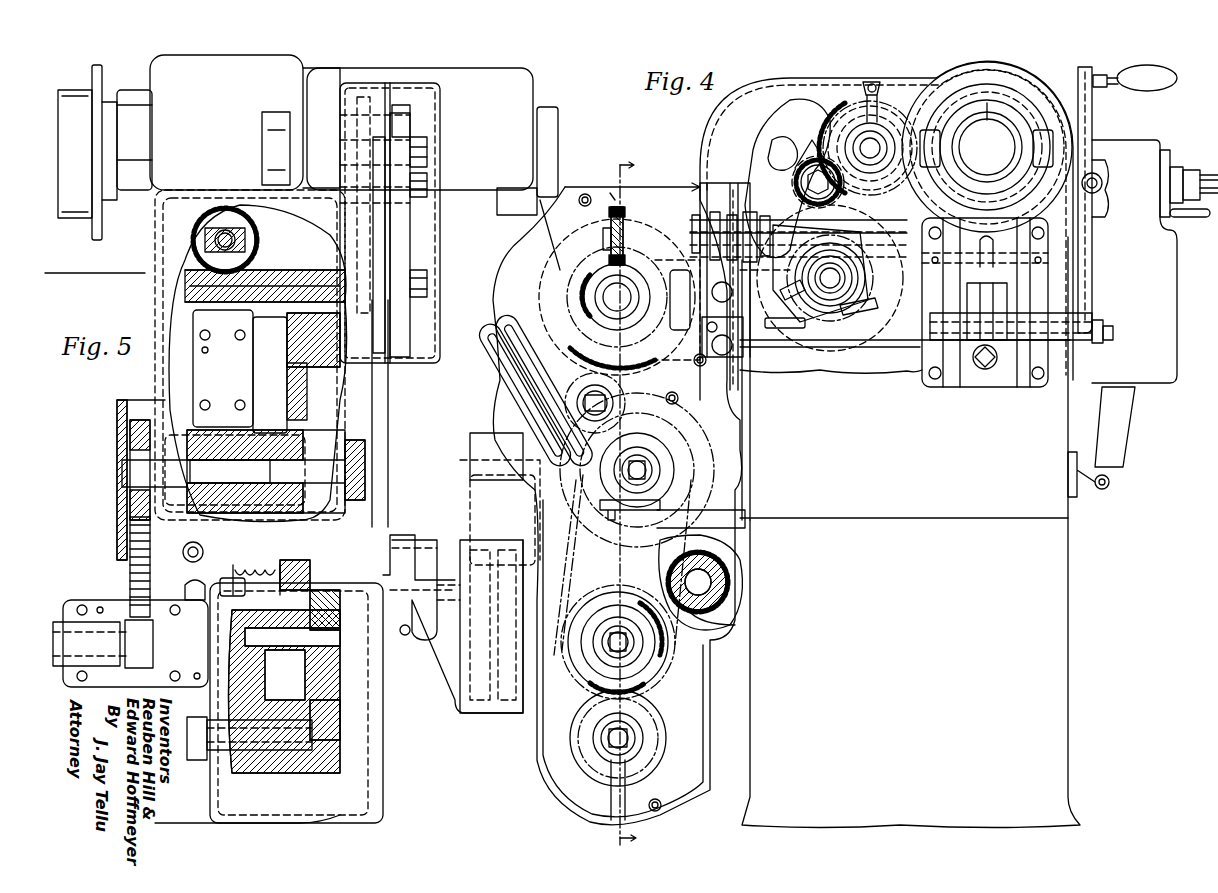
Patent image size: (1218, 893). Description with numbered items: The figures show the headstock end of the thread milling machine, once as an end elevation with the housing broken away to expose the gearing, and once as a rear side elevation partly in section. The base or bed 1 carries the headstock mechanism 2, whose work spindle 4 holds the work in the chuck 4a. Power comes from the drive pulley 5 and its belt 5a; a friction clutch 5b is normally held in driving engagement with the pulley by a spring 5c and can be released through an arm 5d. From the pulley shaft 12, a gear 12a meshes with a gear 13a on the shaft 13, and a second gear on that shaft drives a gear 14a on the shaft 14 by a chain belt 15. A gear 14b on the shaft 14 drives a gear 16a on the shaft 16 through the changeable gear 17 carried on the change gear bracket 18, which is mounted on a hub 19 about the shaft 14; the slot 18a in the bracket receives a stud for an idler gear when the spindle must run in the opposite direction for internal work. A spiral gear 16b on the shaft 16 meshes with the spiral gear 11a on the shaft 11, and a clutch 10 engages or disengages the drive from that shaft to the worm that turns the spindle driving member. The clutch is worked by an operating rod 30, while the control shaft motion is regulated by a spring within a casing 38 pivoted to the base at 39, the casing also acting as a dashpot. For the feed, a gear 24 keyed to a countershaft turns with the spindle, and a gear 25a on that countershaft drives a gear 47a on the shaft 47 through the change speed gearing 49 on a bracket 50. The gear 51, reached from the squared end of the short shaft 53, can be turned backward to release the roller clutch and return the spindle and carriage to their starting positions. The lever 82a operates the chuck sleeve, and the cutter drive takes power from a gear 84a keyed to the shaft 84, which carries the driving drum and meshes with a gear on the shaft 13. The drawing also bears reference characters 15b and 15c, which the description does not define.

In FIG. 4, the base or bed 1 is at (1063, 582).
In FIG. 5, the headstock mechanism 2 is at (525, 83).
In FIG. 4, the work spindle 4 is at (987, 147).
In FIG. 5, the chuck 4a is at (550, 113).
In FIG. 5, the drive pulley 5 is at (480, 680).
In FIG. 4, the drive pulley 5 is at (632, 499).
In FIG. 5, the belt 5a is at (475, 440).
In FIG. 5, the friction clutch 5b is at (520, 485).
In FIG. 5, the spring 5c is at (233, 566).
In FIG. 5, the arm 5d is at (185, 586).
In FIG. 4, the clutch 10 is at (740, 188).
In FIG. 5, the shaft 11 is at (212, 235).
In FIG. 4, the shaft 11 is at (690, 235).
In FIG. 5, the spiral gear 11a is at (240, 238).
In FIG. 4, the spiral gear 11a is at (625, 212).
In FIG. 5, the pulley shaft 12 is at (413, 560).
In FIG. 4, the pulley shaft 12 is at (705, 585).
In FIG. 5, the gear 12a is at (290, 565).
In FIG. 4, the gear 12a is at (700, 630).
In FIG. 5, the shaft 13 is at (285, 691).
In FIG. 4, the shaft 13 is at (610, 652).
In FIG. 5, the gear 13a is at (270, 592).
In FIG. 4, the gear 13a is at (675, 636).
In FIG. 5, the shaft 14 is at (122, 478).
In FIG. 4, the shaft 14 is at (645, 480).
In FIG. 5, the gear 14a is at (130, 440).
In FIG. 5, the gear 14b is at (370, 485).
In FIG. 5, the chain belt 15 is at (130, 548).
In FIG. 4, the chain belt 15 is at (588, 583).
In FIG. 5, the chain shaft 15b is at (135, 668).
In FIG. 5, the sprocket 15c is at (335, 672).
In FIG. 4, the sprocket 15c is at (648, 680).
In FIG. 5, the shaft 16 is at (300, 280).
In FIG. 4, the shaft 16 is at (605, 288).
In FIG. 5, the gear 16a is at (325, 345).
In FIG. 4, the gear 16a is at (690, 350).
In FIG. 5, the spiral gear 16b is at (200, 330).
In FIG. 4, the spiral gear 16b is at (590, 285).
In FIG. 5, the changeable gear 17 is at (378, 385).
In FIG. 4, the changeable gear 17 is at (580, 395).
In FIG. 5, the change gear bracket 18 is at (292, 395).
In FIG. 4, the change gear bracket 18 is at (512, 365).
In FIG. 4, the slot 18a is at (517, 335).
In FIG. 5, the hub 19 is at (345, 445).
In FIG. 4, the hub 19 is at (620, 500).
In FIG. 4, the gear 24 is at (845, 108).
In FIG. 5, the gear 25a is at (410, 122).
In FIG. 4, the gear 25a is at (845, 190).
In FIG. 4, the operating rod 30 is at (1105, 338).
In FIG. 4, the casing 38 is at (1128, 430).
In FIG. 4, the pivot 39 is at (1109, 484).
In FIG. 5, the shaft 47 is at (427, 280).
In FIG. 4, the shaft 47 is at (830, 300).
In FIG. 5, the gear 47a is at (405, 240).
In FIG. 4, the gear 47a is at (885, 330).
In FIG. 5, the change speed gearing 49 is at (405, 205).
In FIG. 4, the change speed gearing 49 is at (805, 172).
In FIG. 4, the bracket 50 is at (760, 135).
In FIG. 5, the gear 51 is at (183, 554).
In FIG. 4, the short shaft 53 is at (1205, 175).
In FIG. 4, the lever 82a is at (1090, 275).
In FIG. 5, the shaft 84 is at (345, 744).
In FIG. 4, the shaft 84 is at (630, 745).
In FIG. 5, the gear 84a is at (330, 718).
In FIG. 4, the gear 84a is at (645, 702).